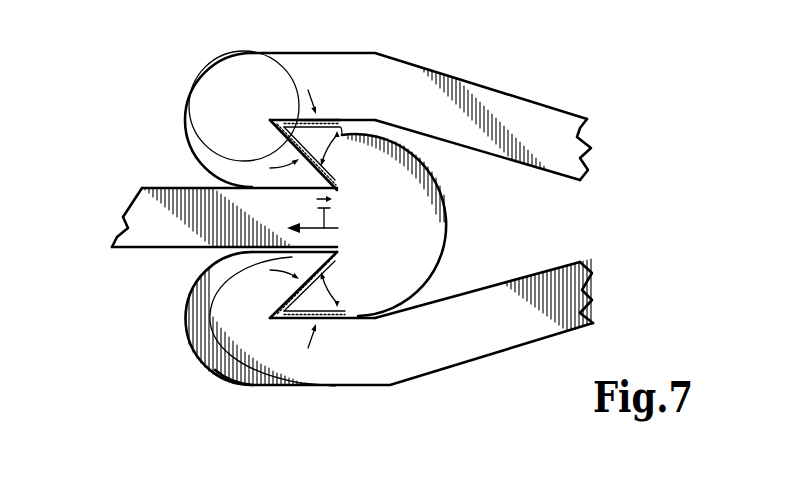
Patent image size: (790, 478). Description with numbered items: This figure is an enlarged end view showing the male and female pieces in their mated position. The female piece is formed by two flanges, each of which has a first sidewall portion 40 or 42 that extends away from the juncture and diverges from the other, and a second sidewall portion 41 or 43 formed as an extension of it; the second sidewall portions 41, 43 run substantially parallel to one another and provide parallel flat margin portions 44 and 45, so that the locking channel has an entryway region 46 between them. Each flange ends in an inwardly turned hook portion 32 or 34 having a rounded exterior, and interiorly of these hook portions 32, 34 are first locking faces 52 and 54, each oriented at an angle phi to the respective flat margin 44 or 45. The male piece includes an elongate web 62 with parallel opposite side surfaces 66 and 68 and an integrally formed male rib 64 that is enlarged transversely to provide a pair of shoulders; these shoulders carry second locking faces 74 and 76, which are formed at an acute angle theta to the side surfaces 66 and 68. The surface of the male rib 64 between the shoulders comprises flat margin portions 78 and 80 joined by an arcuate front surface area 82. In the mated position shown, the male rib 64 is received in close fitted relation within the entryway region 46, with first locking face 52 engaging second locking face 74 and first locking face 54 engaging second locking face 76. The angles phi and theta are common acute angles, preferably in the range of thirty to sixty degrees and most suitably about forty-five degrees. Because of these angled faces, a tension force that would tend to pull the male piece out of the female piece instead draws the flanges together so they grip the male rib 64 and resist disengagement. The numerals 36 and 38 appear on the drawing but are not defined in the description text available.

The hook portion 32 is at (210, 119).
The hook portion 34 is at (233, 331).
The lower surface of upper arm 36 is at (525, 163).
The upper surface of lower arm 38 is at (470, 290).
The first sidewall portion 40 is at (448, 113).
The second sidewall portion 41 is at (350, 68).
The first sidewall portion 42 is at (422, 336).
The second sidewall portion 43 is at (290, 387).
The flat margin portion 44 is at (350, 122).
The flat margin portion 45 is at (363, 322).
The entryway region 46 is at (447, 145).
The first locking face 52 is at (326, 100).
The first locking face 54 is at (341, 307).
The elongate web 62 is at (128, 252).
The male rib 64 is at (406, 225).
The side surface 66 is at (188, 246).
The side surface 68 is at (153, 250).
The second locking face 74 is at (283, 152).
The second locking face 76 is at (210, 310).
The flat margin portion 78 is at (325, 117).
The flat margin portion 80 is at (237, 385).
The arcuate front surface area 82 is at (449, 222).